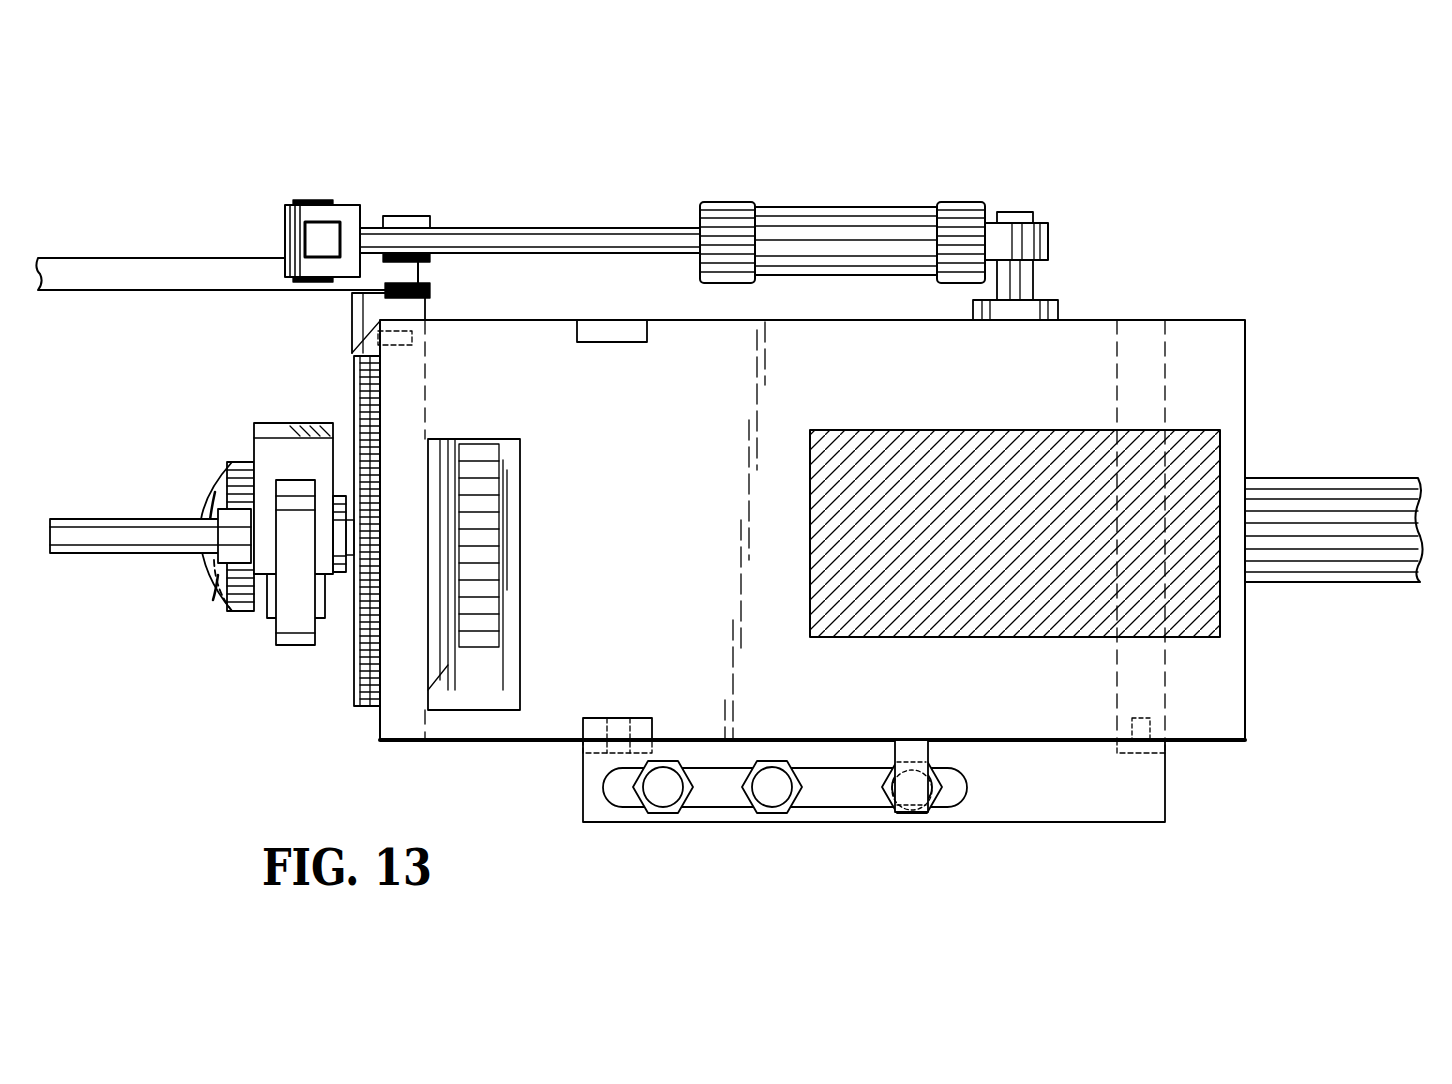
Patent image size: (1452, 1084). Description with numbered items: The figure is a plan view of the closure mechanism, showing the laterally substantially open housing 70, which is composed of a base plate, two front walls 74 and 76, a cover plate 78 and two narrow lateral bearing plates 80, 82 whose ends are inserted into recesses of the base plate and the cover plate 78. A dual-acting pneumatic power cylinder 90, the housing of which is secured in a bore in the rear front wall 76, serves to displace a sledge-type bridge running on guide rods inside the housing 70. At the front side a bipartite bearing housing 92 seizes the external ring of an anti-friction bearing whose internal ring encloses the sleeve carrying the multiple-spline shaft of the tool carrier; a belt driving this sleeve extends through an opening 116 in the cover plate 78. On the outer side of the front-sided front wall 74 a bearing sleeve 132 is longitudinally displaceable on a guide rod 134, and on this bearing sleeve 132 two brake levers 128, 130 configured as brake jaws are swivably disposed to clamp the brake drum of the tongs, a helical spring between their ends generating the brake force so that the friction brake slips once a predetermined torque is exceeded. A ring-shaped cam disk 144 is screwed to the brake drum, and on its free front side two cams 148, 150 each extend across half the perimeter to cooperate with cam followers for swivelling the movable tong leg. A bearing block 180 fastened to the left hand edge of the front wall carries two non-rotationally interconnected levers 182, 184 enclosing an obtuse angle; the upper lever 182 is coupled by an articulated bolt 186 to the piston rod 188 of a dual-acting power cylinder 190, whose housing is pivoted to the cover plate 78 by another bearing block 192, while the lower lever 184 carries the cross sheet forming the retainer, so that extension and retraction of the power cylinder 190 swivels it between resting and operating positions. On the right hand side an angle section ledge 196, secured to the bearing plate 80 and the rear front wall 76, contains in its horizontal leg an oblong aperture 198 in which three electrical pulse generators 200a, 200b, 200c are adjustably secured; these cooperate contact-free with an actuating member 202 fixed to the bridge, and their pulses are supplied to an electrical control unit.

The housing 70 is at (1212, 305).
The front wall 74 is at (437, 745).
The rear front wall 76 is at (1115, 368).
The cover plate 78 is at (1246, 698).
The bearing plate 80 is at (609, 730).
The bearing plate 82 is at (611, 330).
The pneumatic power cylinder 90 is at (1320, 486).
The bearing housing 92 is at (358, 678).
The opening 116 is at (516, 686).
The brake lever 128 is at (294, 645).
The brake lever 130 is at (288, 423).
The bearing sleeve 132 is at (202, 548).
The guide rod 134 is at (115, 548).
The cam disk 144 is at (238, 462).
The cam 148 is at (218, 603).
The cam 150 is at (204, 483).
The bearing block 180 is at (352, 316).
The upper lever 182 is at (285, 245).
The lower lever 184 is at (180, 288).
The articulated bolt 186 is at (313, 205).
The piston rod 188 is at (568, 228).
The power cylinder 190 is at (838, 215).
The bearing block 192 is at (1036, 278).
The angle section ledge 196 is at (1072, 808).
The oblong aperture 198 is at (838, 806).
The electrical pulse generator 200a is at (924, 808).
The electrical pulse generator 200b is at (772, 800).
The electrical pulse generator 200c is at (663, 800).
The actuating member 202 is at (911, 740).